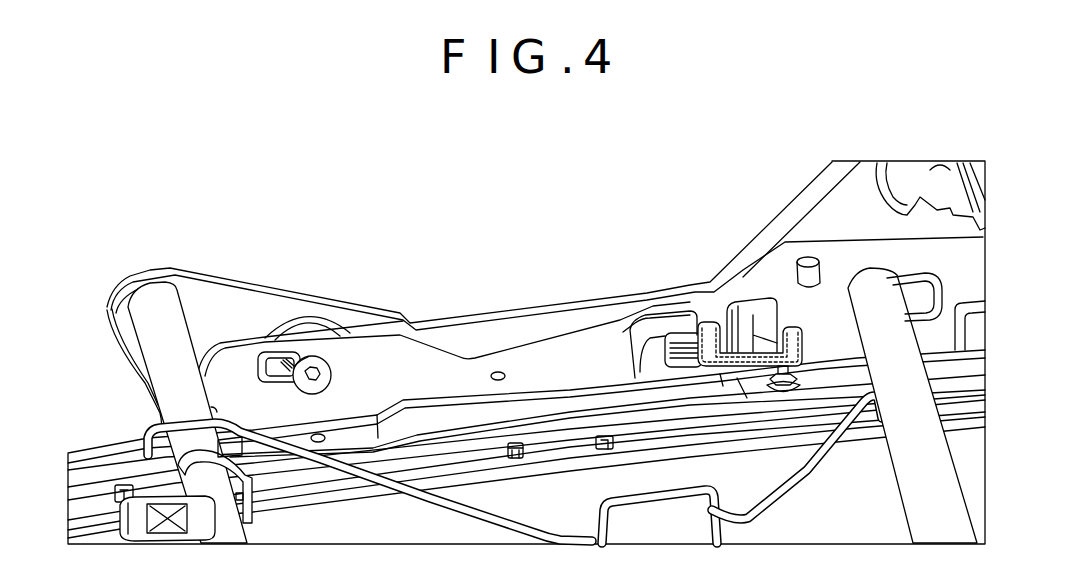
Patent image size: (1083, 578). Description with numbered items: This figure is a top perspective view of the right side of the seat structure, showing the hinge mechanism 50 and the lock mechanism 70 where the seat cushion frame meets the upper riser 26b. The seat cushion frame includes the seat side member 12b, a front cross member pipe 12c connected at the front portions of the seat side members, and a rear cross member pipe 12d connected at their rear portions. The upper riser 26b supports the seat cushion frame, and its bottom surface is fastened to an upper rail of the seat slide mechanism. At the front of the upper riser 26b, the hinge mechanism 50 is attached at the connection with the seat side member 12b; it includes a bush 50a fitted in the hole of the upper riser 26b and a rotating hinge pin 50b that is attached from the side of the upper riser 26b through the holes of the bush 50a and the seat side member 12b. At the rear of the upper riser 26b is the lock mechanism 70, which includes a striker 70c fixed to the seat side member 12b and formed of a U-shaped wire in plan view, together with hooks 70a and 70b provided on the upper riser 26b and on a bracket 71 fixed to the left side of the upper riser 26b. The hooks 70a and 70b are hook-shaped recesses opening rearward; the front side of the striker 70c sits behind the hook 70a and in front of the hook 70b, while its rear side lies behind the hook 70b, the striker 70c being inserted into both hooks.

The seat side member 12b is at (500, 323).
The front cross member pipe 12c is at (163, 384).
The rear cross member pipe 12d is at (907, 483).
The upper riser 26b is at (392, 380).
The hinge mechanism 50 is at (280, 290).
The bush 50a is at (262, 351).
The rotating hinge pin 50b is at (316, 356).
The lock mechanism 70 is at (700, 266).
The hook 70a is at (641, 277).
The hook 70b is at (760, 312).
The striker 70c is at (705, 328).
The bracket 71 is at (643, 358).